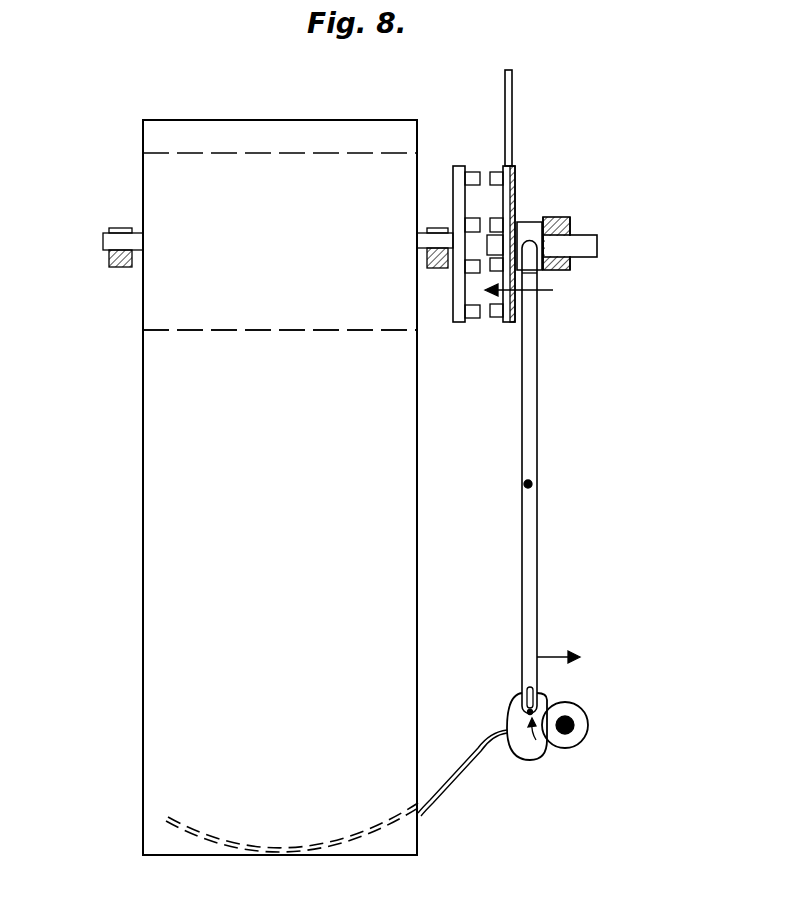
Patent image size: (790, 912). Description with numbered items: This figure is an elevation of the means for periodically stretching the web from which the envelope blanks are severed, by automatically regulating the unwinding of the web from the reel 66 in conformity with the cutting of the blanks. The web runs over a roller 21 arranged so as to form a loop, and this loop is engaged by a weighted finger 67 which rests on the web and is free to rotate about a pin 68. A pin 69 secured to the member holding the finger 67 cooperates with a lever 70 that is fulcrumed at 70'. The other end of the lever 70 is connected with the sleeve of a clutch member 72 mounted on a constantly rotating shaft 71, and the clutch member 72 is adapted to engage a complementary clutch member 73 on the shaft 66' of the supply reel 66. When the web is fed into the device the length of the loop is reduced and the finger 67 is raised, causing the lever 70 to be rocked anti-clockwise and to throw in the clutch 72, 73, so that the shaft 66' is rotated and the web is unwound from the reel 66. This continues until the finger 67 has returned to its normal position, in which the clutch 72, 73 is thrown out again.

The roller 21 is at (163, 627).
The reel 66 is at (241, 310).
The shaft 66' is at (103, 247).
The weighted finger 67 is at (455, 783).
The pin 68 is at (575, 730).
The pin 69 is at (526, 709).
The lever 70 is at (553, 478).
The fulcrum 70' is at (560, 480).
The constantly rotating shaft 71 is at (590, 245).
The clutch member 72 is at (505, 322).
The complementary clutch member 73 is at (458, 305).